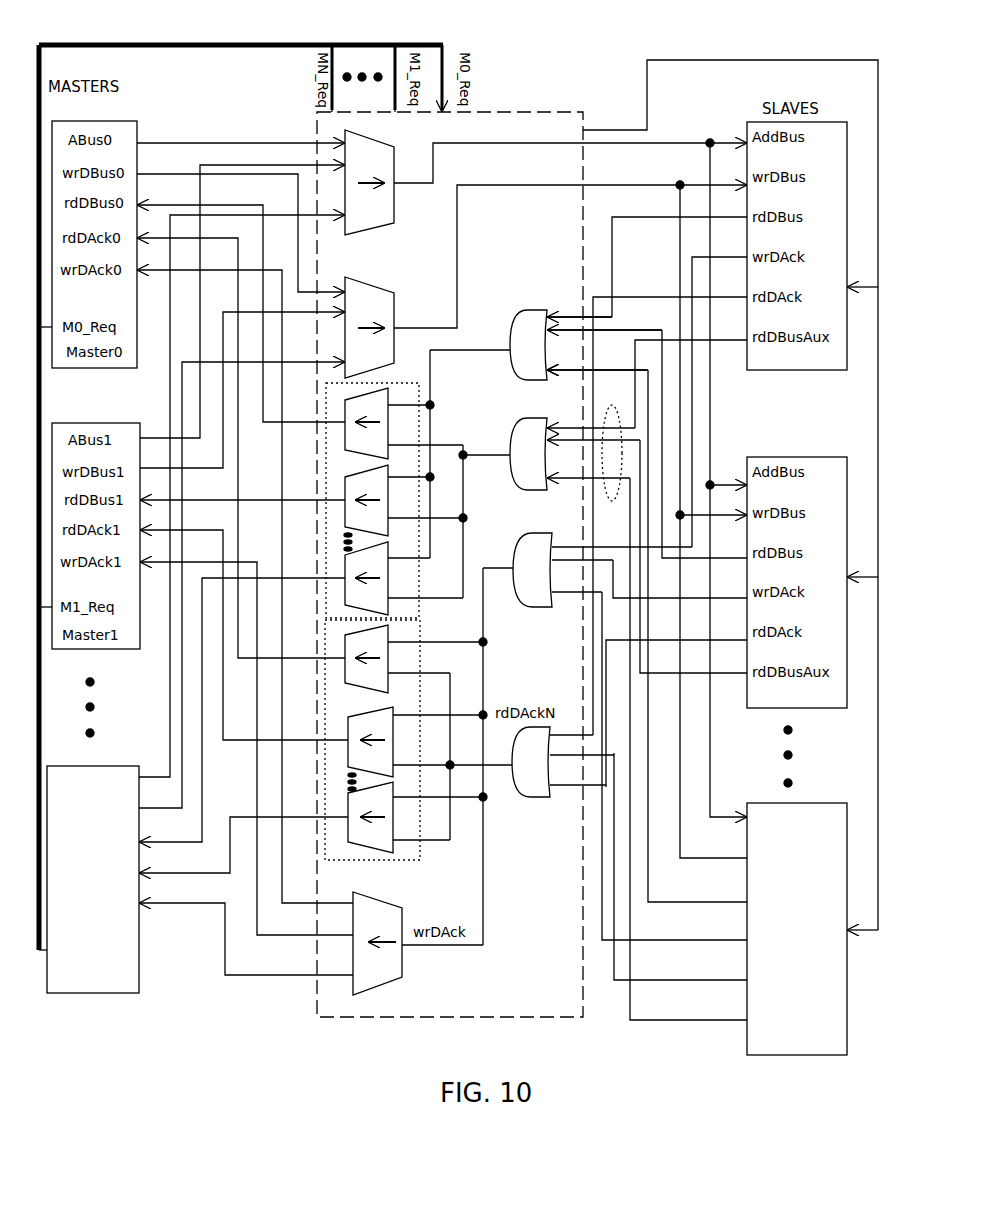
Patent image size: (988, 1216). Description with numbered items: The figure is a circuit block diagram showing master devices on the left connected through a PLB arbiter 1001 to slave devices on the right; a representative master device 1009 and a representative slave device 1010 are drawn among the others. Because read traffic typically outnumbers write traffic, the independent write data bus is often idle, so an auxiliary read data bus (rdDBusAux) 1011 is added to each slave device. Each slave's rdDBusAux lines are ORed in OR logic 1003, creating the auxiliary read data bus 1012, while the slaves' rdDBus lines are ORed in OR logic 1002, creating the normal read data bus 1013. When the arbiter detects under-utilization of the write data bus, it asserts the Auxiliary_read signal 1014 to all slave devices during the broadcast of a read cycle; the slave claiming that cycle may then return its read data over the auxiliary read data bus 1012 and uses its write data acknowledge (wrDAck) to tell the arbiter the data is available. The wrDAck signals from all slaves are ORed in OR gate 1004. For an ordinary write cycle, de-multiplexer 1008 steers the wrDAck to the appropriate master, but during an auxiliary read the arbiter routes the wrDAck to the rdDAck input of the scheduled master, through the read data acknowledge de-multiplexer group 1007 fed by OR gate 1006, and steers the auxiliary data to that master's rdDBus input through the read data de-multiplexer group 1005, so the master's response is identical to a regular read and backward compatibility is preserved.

The PLB arbiter 1001 is at (535, 112).
The OR logic 1002 is at (545, 310).
The OR logic 1003 is at (525, 415).
The OR gate 1004 is at (535, 548).
The read data demultiplexer group 1005 is at (420, 612).
The read data acknowledge OR gate 1006 is at (527, 792).
The read data acknowledge demultiplexer group 1007 is at (420, 862).
The de-multiplexer 1008 is at (405, 977).
The master device 1009 is at (139, 993).
The slave device 1010 is at (747, 1050).
The auxiliary read data bus (rdDBusAux) 1011 is at (623, 413).
The auxiliary read data bus 1012 is at (510, 455).
The normal read data bus 1013 is at (510, 348).
The Auxiliary_read signal 1014 is at (798, 60).